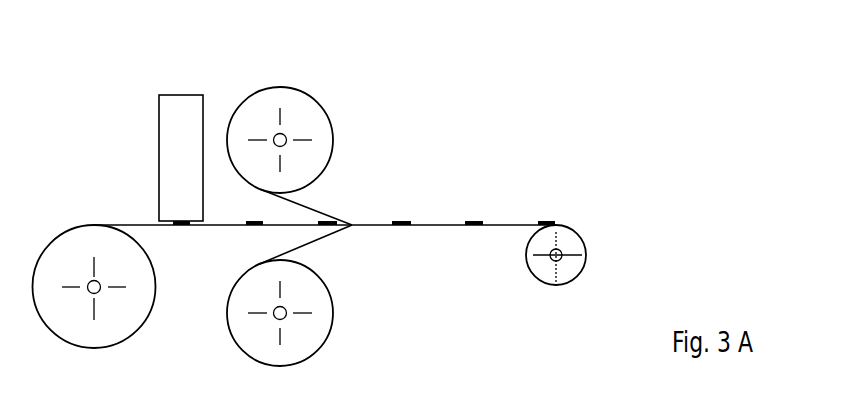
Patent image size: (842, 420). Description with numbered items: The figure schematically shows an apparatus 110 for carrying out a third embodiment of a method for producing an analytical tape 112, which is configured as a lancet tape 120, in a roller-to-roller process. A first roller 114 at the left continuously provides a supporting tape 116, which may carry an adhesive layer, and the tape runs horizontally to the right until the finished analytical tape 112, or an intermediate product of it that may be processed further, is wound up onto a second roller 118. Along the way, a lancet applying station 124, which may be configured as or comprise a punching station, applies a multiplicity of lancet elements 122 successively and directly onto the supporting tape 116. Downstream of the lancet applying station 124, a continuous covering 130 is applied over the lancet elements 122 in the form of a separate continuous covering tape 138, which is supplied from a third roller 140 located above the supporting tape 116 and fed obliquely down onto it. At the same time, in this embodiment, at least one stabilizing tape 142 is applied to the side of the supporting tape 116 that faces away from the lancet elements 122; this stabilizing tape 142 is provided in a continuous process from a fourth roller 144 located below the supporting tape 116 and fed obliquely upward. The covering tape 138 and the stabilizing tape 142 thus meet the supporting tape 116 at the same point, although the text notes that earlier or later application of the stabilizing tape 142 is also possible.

The apparatus 110 is at (536, 103).
The analytical tape 112 is at (502, 225).
The first roller 114 is at (124, 310).
The supporting tape 116 is at (135, 227).
The second roller 118 is at (572, 247).
The lancet tape 120 is at (316, 179).
The lancet elements 122 is at (255, 226).
The lancet applying station 124 is at (198, 170).
The continuous covering 130 is at (320, 208).
The continuous covering tape 138 is at (306, 208).
The third roller 140 is at (307, 107).
The stabilizing tape 142 is at (310, 248).
The fourth roller 144 is at (310, 333).